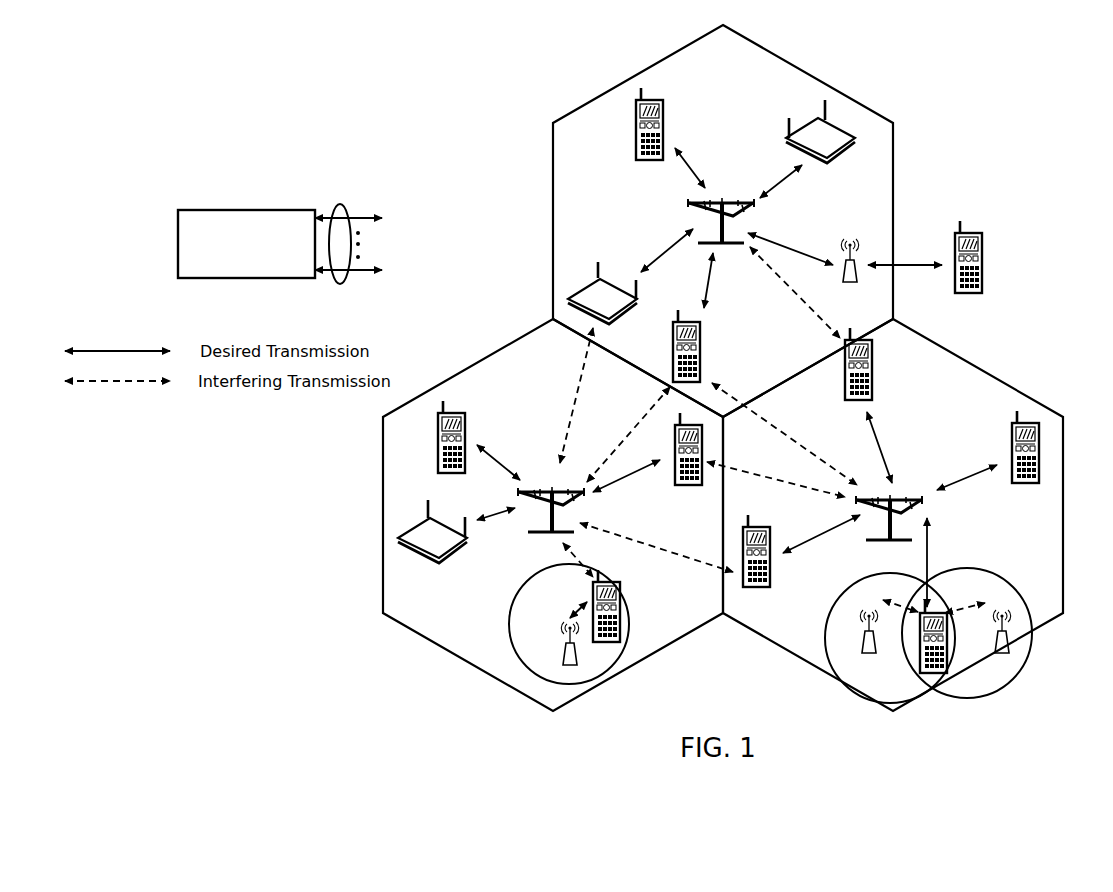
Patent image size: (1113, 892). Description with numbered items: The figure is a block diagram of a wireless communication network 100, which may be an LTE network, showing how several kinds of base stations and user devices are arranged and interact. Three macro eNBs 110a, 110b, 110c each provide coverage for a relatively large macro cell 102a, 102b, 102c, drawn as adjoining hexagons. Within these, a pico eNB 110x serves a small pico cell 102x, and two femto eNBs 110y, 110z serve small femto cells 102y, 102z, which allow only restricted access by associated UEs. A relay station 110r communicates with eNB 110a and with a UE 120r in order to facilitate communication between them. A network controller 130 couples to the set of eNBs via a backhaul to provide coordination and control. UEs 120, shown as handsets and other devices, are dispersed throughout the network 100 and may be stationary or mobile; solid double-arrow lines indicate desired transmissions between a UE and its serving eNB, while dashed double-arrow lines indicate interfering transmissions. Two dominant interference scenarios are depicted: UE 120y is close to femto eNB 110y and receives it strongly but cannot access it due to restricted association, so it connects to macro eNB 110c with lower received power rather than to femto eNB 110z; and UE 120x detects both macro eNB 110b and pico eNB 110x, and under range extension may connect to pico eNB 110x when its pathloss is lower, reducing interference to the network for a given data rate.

The wireless communication network 100 is at (343, 73).
The macro cell 102a is at (762, 47).
The macro cell 102b is at (500, 349).
The macro cell 102c is at (952, 350).
The pico cell 102x is at (528, 585).
The femto cell 102y is at (872, 578).
The femto cell 102z is at (968, 568).
The macro eNB 110a is at (730, 203).
The macro eNB 110b is at (548, 492).
The macro eNB 110c is at (899, 500).
The relay station 110r is at (858, 279).
The pico eNB 110x is at (577, 662).
The femto eNB 110y is at (865, 654).
The femto eNB 110z is at (1012, 637).
The user equipment (UE) 120 is at (636, 107).
The UE 120r is at (983, 249).
The UE 120x is at (622, 602).
The UE 120y is at (930, 673).
The network controller 130 is at (252, 210).